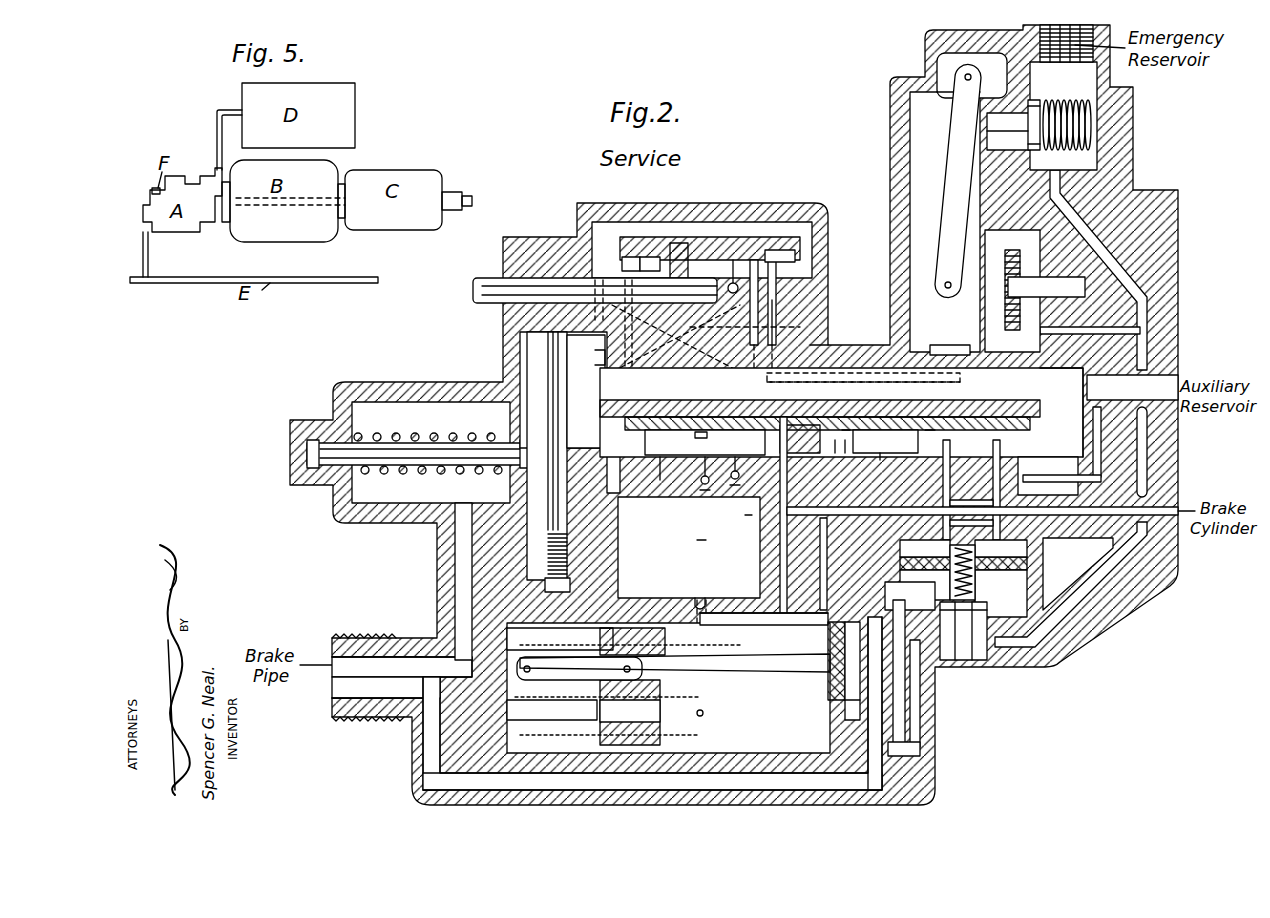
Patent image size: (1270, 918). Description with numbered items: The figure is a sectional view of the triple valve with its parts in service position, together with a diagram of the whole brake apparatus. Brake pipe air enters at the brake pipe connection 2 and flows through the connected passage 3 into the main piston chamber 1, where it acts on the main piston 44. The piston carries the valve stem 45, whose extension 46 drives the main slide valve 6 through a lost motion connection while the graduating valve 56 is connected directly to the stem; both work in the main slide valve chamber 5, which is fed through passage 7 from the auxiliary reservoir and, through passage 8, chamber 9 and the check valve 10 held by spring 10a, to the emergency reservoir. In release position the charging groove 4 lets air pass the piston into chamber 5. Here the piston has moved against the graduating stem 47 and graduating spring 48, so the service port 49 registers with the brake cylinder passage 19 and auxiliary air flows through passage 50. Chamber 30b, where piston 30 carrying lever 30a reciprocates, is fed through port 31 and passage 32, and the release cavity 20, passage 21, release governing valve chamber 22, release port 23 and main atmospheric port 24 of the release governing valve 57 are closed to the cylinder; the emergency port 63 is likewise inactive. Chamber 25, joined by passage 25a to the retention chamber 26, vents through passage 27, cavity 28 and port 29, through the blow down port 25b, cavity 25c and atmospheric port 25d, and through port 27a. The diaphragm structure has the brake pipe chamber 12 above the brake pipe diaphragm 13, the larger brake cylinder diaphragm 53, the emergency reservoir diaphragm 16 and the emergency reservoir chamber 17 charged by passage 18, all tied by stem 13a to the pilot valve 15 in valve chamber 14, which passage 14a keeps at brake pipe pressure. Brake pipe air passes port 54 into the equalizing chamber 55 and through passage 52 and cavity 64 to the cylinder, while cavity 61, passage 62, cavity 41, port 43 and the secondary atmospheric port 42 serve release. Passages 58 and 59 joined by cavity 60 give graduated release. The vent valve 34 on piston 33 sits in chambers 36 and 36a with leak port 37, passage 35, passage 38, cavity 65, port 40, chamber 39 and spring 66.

The main piston chamber 1 is at (431, 452).
The brake pipe connection 2 is at (360, 655).
The connected passage 3 is at (455, 568).
The charging groove 4 is at (586, 391).
The main slide valve chamber 5 is at (636, 410).
The main slide valve 6 is at (660, 415).
The passage 7 is at (1175, 388).
The passage 8 is at (950, 352).
The chamber 9 is at (958, 202).
The check valve 10 is at (1036, 112).
The spring 10a is at (1095, 126).
The brake pipe chamber 12 is at (560, 637).
The brake pipe diaphragm 13 is at (579, 668).
The stem 13a is at (609, 665).
The valve chamber 14 is at (930, 690).
The passage 14a is at (631, 635).
The pilot valve 15 is at (930, 670).
The emergency reservoir diaphragm 16 is at (611, 711).
The emergency reservoir chamber 17 is at (607, 723).
The passage 18 is at (1150, 313).
The brake cylinder passage 19 is at (1175, 507).
The cavity 20 is at (705, 442).
The passage 21 is at (735, 485).
The release governing valve chamber 22 is at (690, 240).
The release port 23 is at (754, 262).
The main atmospheric port 24 is at (772, 262).
The chamber 25 is at (689, 533).
The passage 25a is at (700, 598).
The blow down port 25b is at (701, 547).
The cavity 25c is at (700, 432).
The atmospheric port 25d is at (705, 490).
The retention chamber 26 is at (722, 711).
The passage 27 is at (608, 487).
The port 27a is at (665, 480).
The cavity 28 is at (632, 257).
The port and passage 29 is at (650, 257).
The piston 30 is at (1000, 255).
The lever 30a is at (957, 151).
The chamber 30b is at (1008, 288).
The port 31 is at (832, 440).
The port and passage 32 is at (1140, 341).
The piston 33 is at (1027, 565).
The brake pipe vent valve 34 is at (987, 608).
The passage 35 is at (652, 780).
The chamber 36 is at (927, 585).
The chamber 36a is at (1001, 548).
The leak port 37 is at (1001, 593).
The passage 38 is at (925, 548).
The chamber 39 is at (1078, 574).
The port and passage 40 is at (1050, 495).
The cavity 41 is at (891, 448).
The secondary atmospheric port 42 is at (885, 441).
The port 43 is at (930, 430).
The main piston 44 is at (550, 362).
The valve stem 45 is at (590, 400).
The extension 46 is at (1052, 420).
The graduating stem 47 is at (382, 468).
The graduating spring 48 is at (392, 440).
The service port 49 is at (748, 520).
The passage 50 is at (800, 430).
The passage 52 is at (828, 660).
The brake cylinder diaphragm 53 is at (552, 710).
The port 54 is at (840, 705).
The equalizing chamber 55 is at (745, 666).
The graduating valve 56 is at (815, 352).
The release governing valve 57 is at (822, 213).
The passage 58 is at (756, 292).
The passage 59 is at (775, 300).
The cavity 60 is at (800, 256).
The cavity 61 is at (935, 578).
The passage 62 is at (822, 600).
The emergency port 63 is at (830, 385).
The cavity 64 is at (995, 450).
The cavity 65 is at (950, 430).
The spring 66 is at (995, 550).